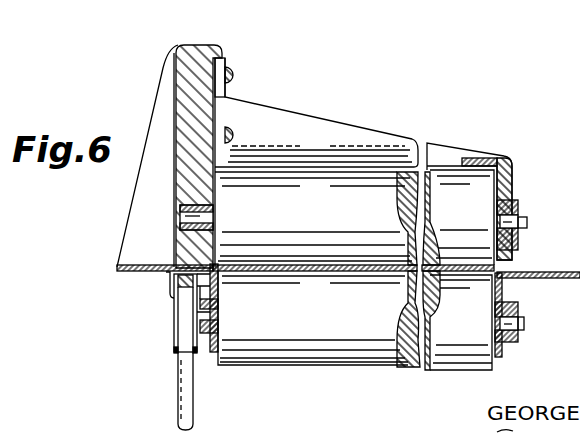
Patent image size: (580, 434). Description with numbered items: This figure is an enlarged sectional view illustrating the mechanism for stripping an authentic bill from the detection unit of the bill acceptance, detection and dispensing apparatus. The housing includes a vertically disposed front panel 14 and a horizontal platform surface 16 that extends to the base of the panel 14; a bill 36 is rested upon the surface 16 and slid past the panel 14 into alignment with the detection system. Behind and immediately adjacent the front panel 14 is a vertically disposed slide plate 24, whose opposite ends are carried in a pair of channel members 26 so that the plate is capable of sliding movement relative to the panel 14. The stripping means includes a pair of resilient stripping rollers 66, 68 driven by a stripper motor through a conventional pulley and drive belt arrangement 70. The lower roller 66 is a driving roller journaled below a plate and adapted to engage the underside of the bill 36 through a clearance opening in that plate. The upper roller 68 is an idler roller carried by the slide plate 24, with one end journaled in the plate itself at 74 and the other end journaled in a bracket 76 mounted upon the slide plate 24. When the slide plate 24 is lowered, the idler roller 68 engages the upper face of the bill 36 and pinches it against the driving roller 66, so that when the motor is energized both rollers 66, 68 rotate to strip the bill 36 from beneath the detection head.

The front panel 14 is at (180, 70).
The horizontal platform surface 16 is at (141, 276).
The slide plate 24 is at (200, 46).
The channel members 26 is at (227, 56).
The bill 36 is at (262, 262).
The lower roller 66 is at (471, 358).
The upper roller 68 is at (488, 186).
The pulley and drive belt arrangement 70 is at (158, 338).
The journal in slide plate 74 is at (182, 204).
The bracket 76 is at (524, 199).